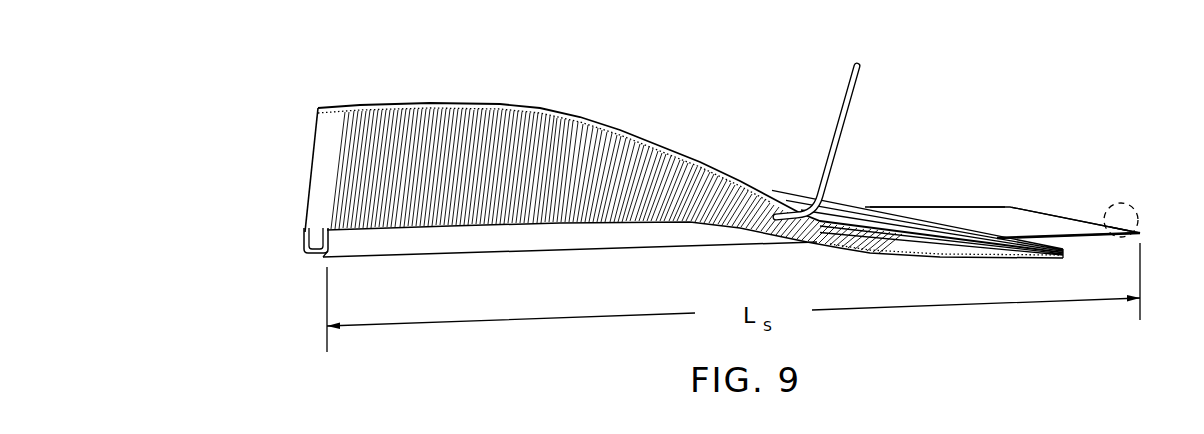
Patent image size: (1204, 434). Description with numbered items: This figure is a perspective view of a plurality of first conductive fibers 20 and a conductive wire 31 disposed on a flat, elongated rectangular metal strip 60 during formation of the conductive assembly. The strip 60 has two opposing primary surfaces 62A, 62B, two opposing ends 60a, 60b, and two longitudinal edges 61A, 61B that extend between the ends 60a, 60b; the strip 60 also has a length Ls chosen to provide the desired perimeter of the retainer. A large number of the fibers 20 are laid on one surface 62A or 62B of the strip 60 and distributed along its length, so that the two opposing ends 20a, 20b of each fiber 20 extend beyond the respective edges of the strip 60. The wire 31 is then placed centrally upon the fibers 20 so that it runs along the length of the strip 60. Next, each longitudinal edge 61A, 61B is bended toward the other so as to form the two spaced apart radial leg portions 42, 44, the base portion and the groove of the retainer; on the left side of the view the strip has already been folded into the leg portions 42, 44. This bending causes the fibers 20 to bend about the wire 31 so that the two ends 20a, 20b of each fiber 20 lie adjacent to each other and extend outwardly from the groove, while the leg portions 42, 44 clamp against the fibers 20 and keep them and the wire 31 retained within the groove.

The first conductive fibers 20 is at (365, 100).
The end of conductive fiber 20a is at (533, 103).
The end of conductive fiber 20b is at (477, 103).
The conductive wire 31 is at (858, 84).
The radial leg portion 42 is at (398, 243).
The radial leg portion 44 is at (298, 233).
The strip 60 is at (984, 172).
The end of strip 60a is at (305, 249).
The end of strip 60b is at (1090, 222).
The longitudinal edge of strip 61A is at (1070, 237).
The longitudinal edge of strip 61B is at (937, 206).
The primary surface of strip 62A is at (1013, 225).
The primary surface of strip 62B is at (1127, 197).